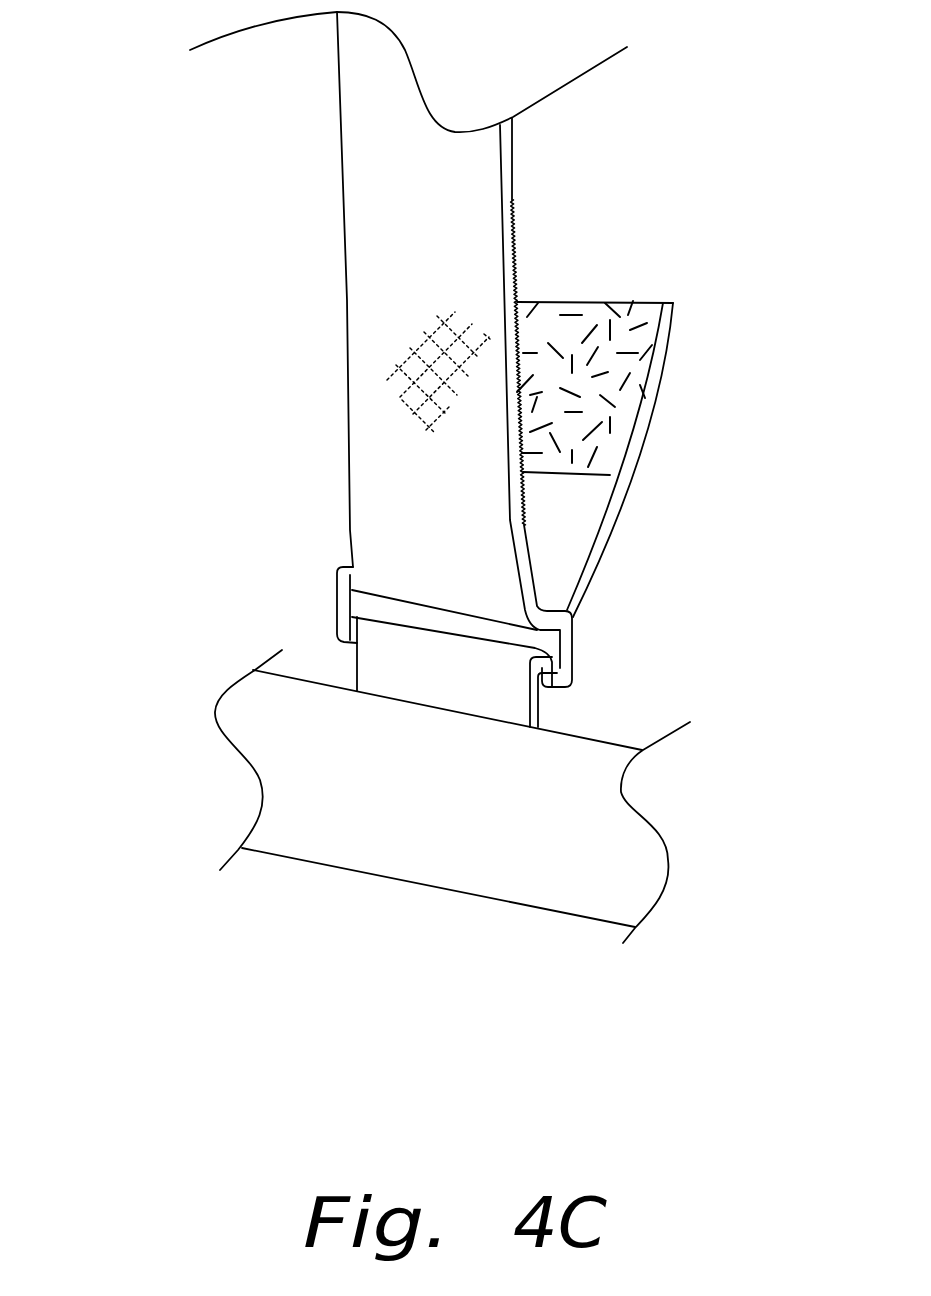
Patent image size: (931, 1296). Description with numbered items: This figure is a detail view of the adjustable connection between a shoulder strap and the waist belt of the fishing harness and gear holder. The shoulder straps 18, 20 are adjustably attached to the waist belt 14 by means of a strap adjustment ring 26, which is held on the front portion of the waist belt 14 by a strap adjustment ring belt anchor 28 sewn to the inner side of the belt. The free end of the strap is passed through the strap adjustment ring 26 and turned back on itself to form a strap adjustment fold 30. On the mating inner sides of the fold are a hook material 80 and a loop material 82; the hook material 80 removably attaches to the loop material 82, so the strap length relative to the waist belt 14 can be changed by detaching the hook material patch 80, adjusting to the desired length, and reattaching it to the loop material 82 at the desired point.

The waist belt 14 is at (312, 840).
The shoulder strap 18 is at (367, 349).
The shoulder strap 20 is at (370, 228).
The strap adjustment ring 26 is at (575, 652).
The strap adjustment ring belt anchor 28 is at (493, 700).
The strap adjustment fold 30 is at (602, 553).
The hook material 80 is at (592, 312).
The loop material 82 is at (520, 345).